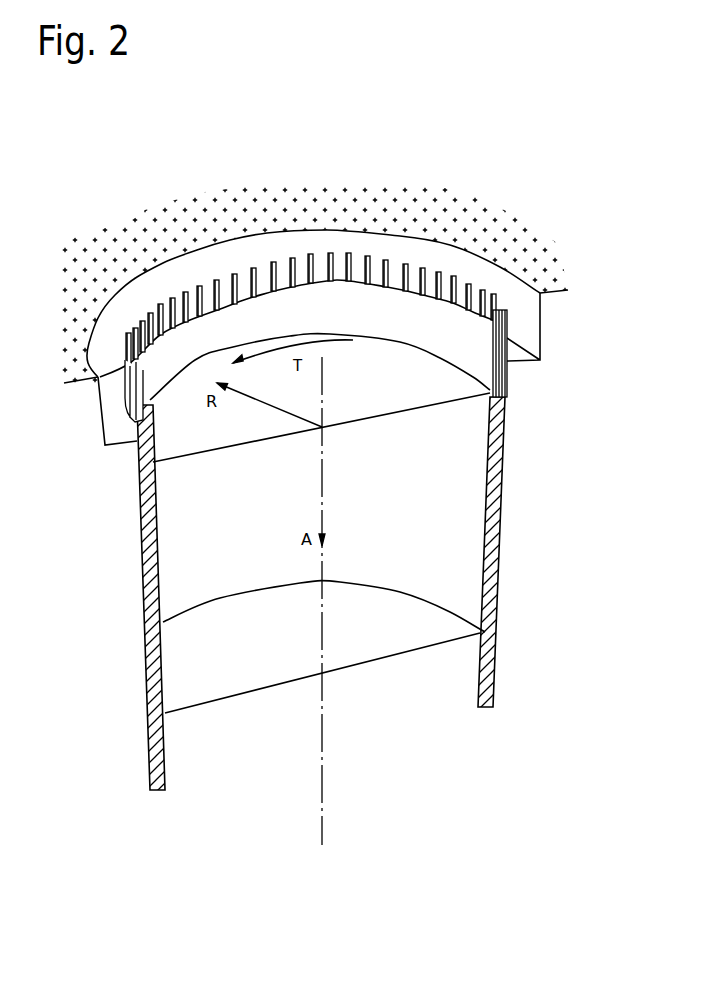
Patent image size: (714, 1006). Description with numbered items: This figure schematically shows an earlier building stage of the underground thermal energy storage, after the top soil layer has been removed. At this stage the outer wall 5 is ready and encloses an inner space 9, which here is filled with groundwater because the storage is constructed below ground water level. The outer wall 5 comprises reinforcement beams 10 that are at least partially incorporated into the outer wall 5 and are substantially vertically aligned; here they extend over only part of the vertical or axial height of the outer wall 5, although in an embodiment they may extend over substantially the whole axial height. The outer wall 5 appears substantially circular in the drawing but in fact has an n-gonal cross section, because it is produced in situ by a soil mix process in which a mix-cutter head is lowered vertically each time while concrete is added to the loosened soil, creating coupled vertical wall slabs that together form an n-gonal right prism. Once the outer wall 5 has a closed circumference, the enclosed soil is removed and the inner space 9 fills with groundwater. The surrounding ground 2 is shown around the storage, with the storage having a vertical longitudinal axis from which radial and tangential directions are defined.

The ground 2 is at (530, 248).
The outer wall 5 is at (480, 628).
The inner space 9 is at (352, 390).
The reinforcement beams 10 is at (291, 266).